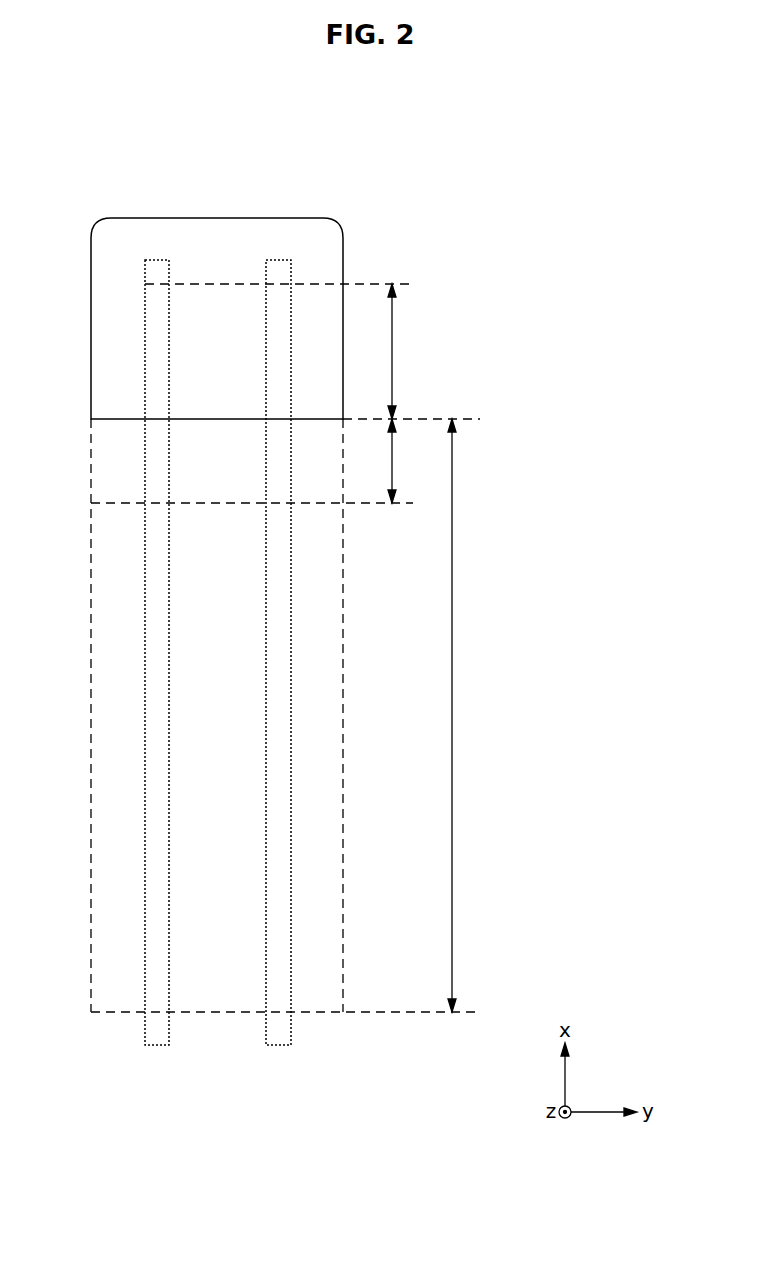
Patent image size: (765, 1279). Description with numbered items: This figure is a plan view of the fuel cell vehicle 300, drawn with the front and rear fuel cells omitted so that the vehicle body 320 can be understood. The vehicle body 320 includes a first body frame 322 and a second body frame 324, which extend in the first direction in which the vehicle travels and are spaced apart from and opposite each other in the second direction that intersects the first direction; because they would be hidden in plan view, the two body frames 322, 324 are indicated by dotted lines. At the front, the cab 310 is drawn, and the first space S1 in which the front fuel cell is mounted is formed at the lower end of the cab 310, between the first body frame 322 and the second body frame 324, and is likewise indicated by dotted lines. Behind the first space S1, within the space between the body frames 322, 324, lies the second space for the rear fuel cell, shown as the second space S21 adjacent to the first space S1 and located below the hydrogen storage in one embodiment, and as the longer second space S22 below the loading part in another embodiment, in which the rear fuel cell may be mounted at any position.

The fuel cell vehicle 300 is at (448, 156).
The cab 310 is at (282, 229).
The vehicle body 320 is at (158, 1095).
The first body frame 322 is at (159, 1047).
The second body frame 324 is at (279, 1047).
The first space S1 is at (404, 351).
The second space S21 is at (409, 461).
The second space S22 is at (470, 715).